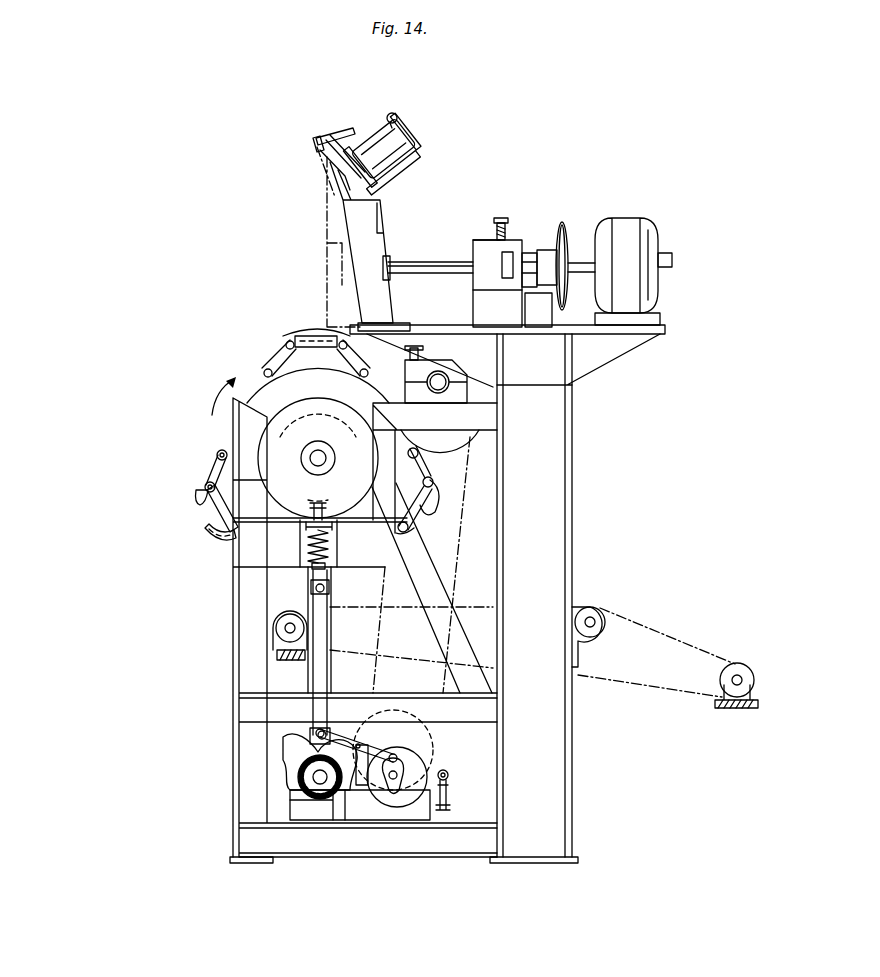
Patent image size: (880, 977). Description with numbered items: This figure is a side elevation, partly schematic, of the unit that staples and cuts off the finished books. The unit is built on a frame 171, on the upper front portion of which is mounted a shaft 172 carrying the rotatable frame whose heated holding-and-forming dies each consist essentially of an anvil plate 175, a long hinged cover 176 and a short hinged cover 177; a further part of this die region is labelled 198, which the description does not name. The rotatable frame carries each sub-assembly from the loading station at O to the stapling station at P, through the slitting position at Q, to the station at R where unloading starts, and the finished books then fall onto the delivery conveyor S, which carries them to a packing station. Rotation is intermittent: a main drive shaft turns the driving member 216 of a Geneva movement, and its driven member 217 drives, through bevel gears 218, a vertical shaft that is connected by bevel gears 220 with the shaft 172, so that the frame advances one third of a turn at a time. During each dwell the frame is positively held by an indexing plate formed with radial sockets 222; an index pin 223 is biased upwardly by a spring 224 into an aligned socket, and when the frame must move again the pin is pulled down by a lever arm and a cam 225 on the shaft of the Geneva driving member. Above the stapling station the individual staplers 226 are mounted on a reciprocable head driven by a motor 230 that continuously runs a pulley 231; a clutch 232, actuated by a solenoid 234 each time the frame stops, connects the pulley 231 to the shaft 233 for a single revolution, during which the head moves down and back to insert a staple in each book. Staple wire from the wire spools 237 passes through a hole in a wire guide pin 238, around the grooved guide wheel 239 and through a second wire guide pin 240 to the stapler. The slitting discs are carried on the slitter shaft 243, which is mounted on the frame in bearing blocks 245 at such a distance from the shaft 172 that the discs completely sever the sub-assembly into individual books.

The frame 171 is at (569, 753).
The shaft 172 is at (327, 457).
The anvil plate 175 is at (212, 507).
The long hinged cover 176 is at (214, 545).
The short hinged cover 177 is at (192, 491).
The guard ring 198 is at (270, 380).
The driving member 216 is at (420, 753).
The driven member 217 is at (292, 751).
The bevel gears 218 is at (332, 388).
The bevel gears 220 is at (297, 611).
The radial sockets 222 is at (348, 428).
The index pin 223 is at (307, 528).
The spring 224 is at (310, 549).
The cam 225 is at (395, 792).
The stapler 226 is at (332, 287).
The motor 230 is at (640, 222).
The pulley 231 is at (568, 236).
The clutch 232 is at (528, 258).
The shaft 233 is at (489, 256).
The solenoid 234 is at (545, 322).
The wire spool 237 is at (364, 135).
The wire guide pin 238 is at (393, 178).
The grooved guide wheel 239 is at (335, 132).
The wire guide pin 240 is at (316, 140).
The slitter shaft 243 is at (443, 375).
The bearing blocks 245 is at (408, 388).
The loading station O is at (122, 514).
The stapling station P is at (286, 317).
The slitting position Q is at (484, 388).
The unloading station R is at (488, 512).
The delivery conveyor S is at (660, 617).